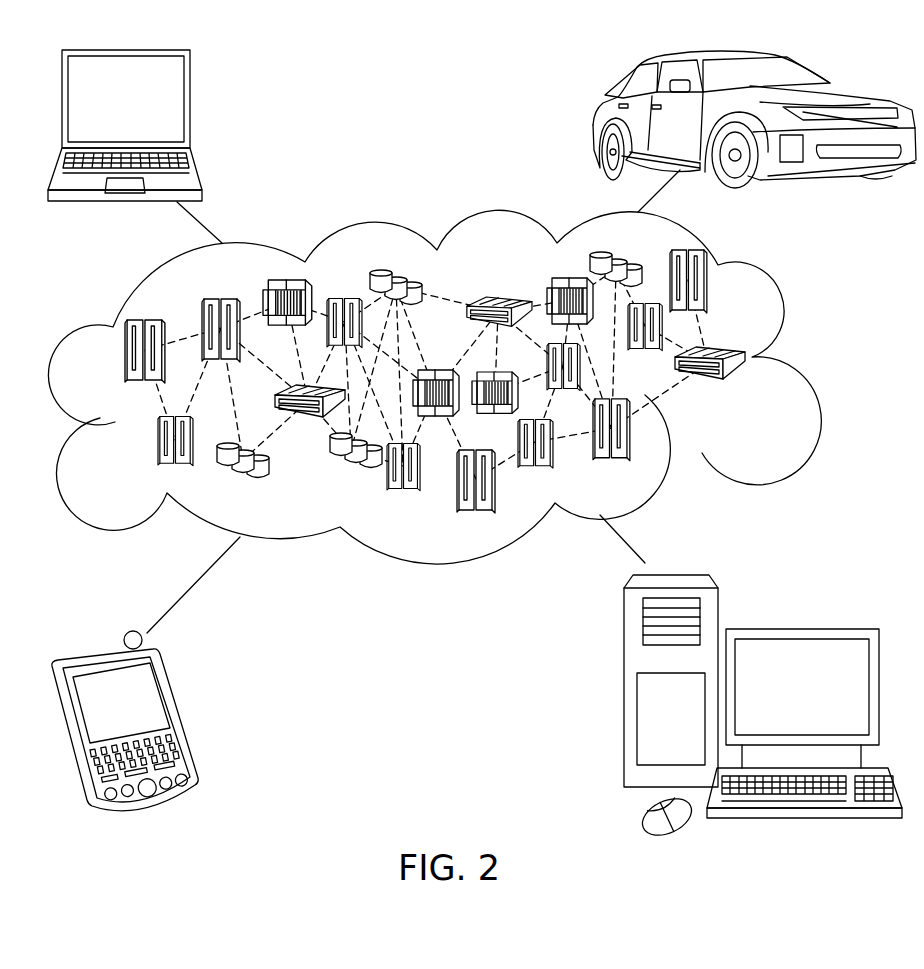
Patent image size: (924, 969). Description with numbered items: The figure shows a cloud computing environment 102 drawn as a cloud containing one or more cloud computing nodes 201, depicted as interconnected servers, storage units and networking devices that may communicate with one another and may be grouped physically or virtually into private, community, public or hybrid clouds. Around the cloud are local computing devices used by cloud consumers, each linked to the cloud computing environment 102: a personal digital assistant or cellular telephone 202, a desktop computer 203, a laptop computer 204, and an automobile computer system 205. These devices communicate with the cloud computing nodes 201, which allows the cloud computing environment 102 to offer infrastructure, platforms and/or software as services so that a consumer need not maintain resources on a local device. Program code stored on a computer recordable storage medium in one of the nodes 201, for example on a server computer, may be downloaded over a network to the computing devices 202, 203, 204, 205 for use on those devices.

The cloud computing environment 102 is at (800, 357).
The cloud computing nodes 201 is at (750, 390).
The personal digital assistant (PDA) or cellular telephone 202 is at (181, 716).
The desktop computer 203 is at (800, 629).
The laptop computer 204 is at (190, 103).
The automobile computer system 205 is at (596, 120).